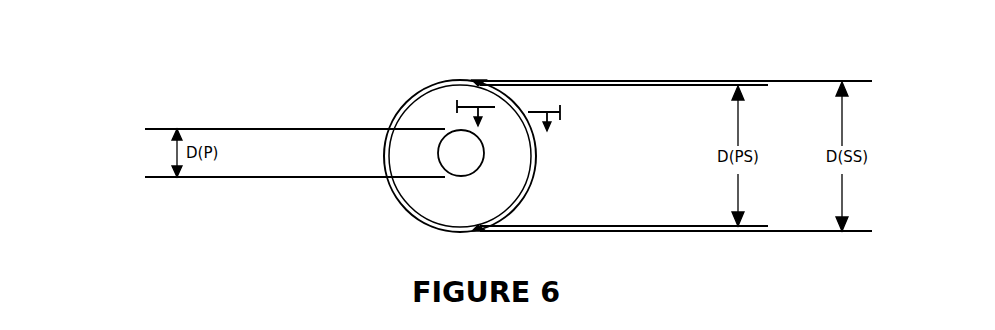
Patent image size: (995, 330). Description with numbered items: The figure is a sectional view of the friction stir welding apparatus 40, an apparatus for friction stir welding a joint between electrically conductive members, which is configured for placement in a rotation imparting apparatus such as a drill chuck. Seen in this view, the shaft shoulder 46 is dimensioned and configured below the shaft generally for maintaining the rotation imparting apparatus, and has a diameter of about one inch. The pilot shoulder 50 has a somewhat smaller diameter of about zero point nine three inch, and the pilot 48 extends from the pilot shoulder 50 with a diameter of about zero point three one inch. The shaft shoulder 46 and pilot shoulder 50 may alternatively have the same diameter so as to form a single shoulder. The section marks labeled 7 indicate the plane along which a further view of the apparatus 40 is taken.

The apparatus 40 is at (315, 87).
The shaft shoulder 46 is at (540, 83).
The pilot 48 is at (467, 170).
The pilot shoulder 50 is at (414, 110).
The section line 7- 7 is at (517, 120).